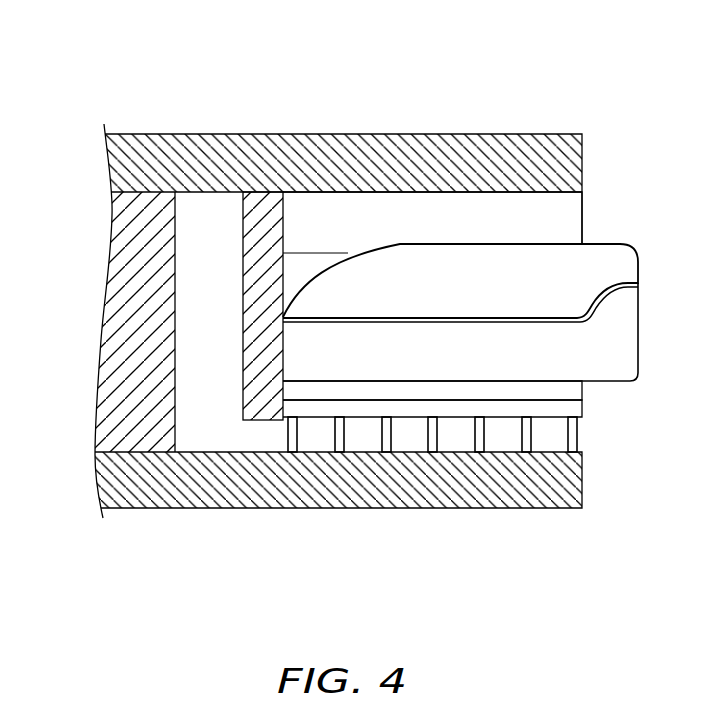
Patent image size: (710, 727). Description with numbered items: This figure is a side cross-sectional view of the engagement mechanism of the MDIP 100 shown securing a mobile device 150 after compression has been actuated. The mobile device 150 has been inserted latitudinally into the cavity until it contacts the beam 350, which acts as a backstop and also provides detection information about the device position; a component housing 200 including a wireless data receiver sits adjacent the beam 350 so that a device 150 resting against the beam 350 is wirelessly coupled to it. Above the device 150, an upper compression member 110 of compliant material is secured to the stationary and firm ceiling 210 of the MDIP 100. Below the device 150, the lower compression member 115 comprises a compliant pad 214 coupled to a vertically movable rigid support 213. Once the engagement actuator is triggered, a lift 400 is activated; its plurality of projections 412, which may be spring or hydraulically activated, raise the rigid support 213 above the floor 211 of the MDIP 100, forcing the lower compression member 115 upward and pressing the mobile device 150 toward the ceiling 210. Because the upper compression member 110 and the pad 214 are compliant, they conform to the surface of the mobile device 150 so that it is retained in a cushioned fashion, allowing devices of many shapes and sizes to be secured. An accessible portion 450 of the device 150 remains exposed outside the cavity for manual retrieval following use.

The MDIP 100 is at (88, 56).
The upper compression member 110 is at (393, 205).
The ceiling 210 is at (470, 134).
The floor 211 is at (167, 494).
The component housing 200 is at (110, 355).
The beam 350 is at (245, 277).
The accessible portion 450 is at (615, 270).
The mobile device 150 is at (617, 354).
The lower compression member 115 is at (598, 395).
The pad 214 is at (373, 390).
The rigid support 213 is at (405, 410).
The lift 400 is at (598, 436).
The projections 412 is at (293, 437).